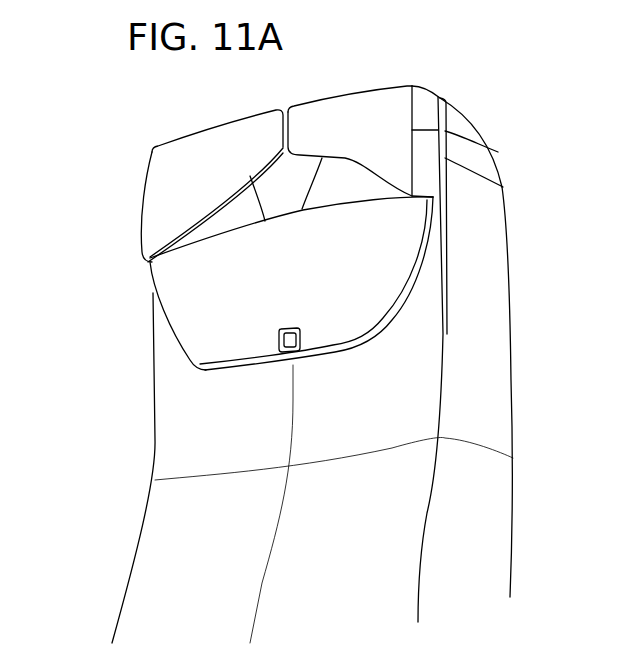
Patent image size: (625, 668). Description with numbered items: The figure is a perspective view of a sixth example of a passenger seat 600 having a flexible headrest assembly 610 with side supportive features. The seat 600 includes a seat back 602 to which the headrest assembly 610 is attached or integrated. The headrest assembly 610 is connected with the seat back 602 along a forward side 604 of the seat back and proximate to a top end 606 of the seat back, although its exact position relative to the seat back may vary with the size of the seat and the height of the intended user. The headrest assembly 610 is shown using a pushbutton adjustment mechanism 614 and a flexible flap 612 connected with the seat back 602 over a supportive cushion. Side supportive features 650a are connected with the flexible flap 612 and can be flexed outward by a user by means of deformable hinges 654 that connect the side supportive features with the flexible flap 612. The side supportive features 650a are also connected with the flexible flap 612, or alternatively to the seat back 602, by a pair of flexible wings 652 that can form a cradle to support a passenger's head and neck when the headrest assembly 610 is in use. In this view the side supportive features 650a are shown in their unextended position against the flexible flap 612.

The passenger seat 600 is at (100, 154).
The seat back 602 is at (490, 293).
The forward side 604 is at (404, 410).
The top end 606 is at (472, 115).
The flexible headrest assembly 610 is at (416, 59).
The flexible flap 612 is at (178, 320).
The pushbutton adjustment mechanism 614 is at (265, 326).
The side supportive feature 650a is at (217, 173).
The flexible wings 652 is at (322, 193).
The deformable hinges 654 is at (138, 208).